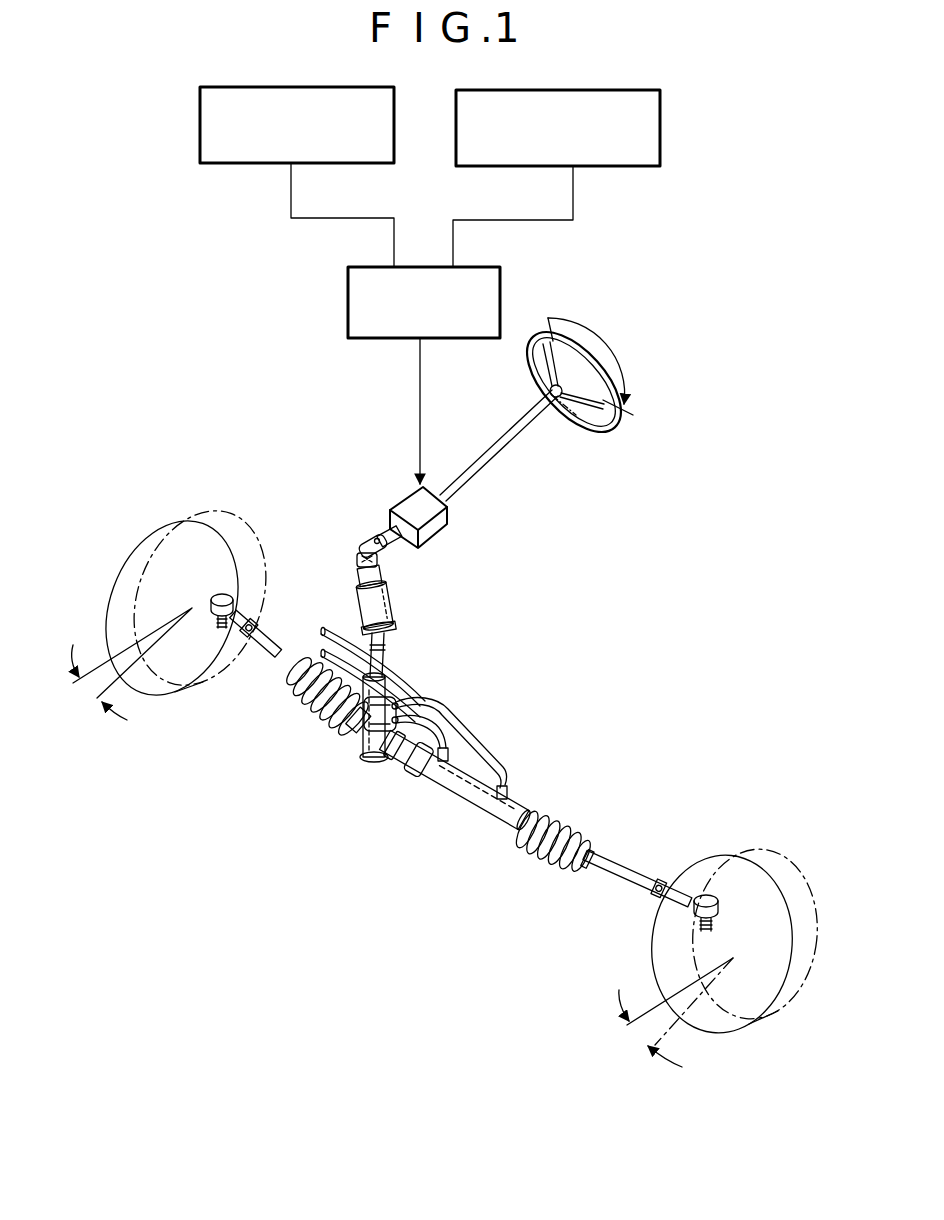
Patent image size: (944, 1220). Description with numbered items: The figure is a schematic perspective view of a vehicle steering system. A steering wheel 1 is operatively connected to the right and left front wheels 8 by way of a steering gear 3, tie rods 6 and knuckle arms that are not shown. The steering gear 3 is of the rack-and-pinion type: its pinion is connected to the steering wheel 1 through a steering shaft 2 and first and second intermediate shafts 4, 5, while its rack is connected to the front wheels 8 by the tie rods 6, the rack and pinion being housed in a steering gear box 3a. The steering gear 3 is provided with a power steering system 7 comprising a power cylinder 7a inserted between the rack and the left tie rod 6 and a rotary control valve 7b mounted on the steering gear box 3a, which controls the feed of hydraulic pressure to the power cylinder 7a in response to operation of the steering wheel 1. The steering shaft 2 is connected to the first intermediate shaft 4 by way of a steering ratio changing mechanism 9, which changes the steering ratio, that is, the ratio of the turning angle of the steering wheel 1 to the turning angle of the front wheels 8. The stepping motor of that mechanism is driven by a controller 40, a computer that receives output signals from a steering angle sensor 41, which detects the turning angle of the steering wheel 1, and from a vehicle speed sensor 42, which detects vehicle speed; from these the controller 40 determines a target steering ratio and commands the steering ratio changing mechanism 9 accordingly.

The steering wheel 1 is at (614, 427).
The steering shaft 2 is at (503, 444).
The steering gear 3 is at (370, 781).
The steering gear box 3a is at (362, 759).
The first intermediate shaft 4 is at (392, 545).
The second intermediate shaft 5 is at (389, 641).
The tie rods 6 is at (286, 654).
The power steering system 7 is at (463, 711).
The power cylinder 7a is at (474, 806).
The rotary control valve 7b is at (354, 720).
The front wheels 8 is at (259, 574).
The steering ratio changing mechanism 9 is at (438, 530).
The controller 40 is at (348, 300).
The steering angle sensor 41 is at (258, 163).
The vehicle speed sensor 42 is at (640, 166).